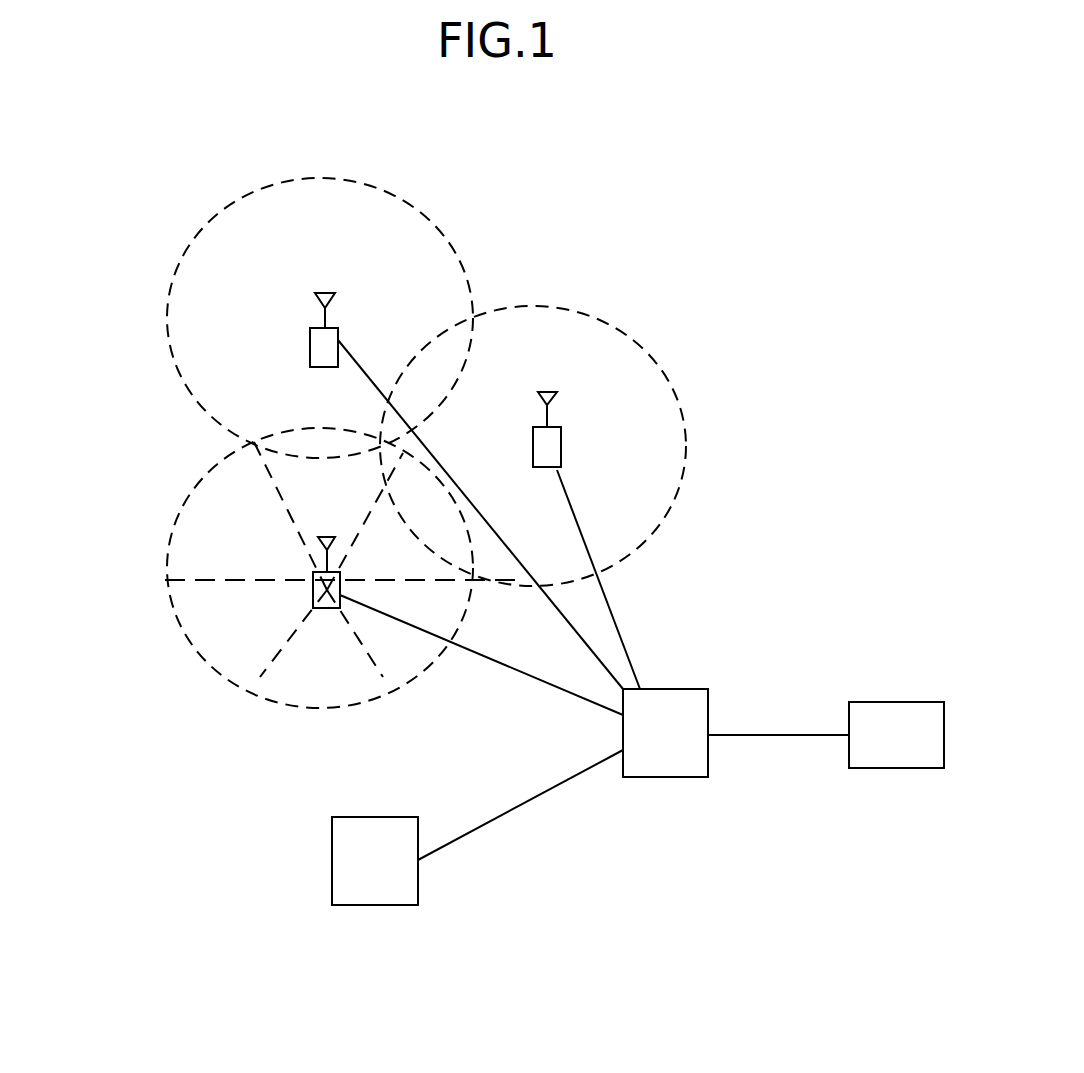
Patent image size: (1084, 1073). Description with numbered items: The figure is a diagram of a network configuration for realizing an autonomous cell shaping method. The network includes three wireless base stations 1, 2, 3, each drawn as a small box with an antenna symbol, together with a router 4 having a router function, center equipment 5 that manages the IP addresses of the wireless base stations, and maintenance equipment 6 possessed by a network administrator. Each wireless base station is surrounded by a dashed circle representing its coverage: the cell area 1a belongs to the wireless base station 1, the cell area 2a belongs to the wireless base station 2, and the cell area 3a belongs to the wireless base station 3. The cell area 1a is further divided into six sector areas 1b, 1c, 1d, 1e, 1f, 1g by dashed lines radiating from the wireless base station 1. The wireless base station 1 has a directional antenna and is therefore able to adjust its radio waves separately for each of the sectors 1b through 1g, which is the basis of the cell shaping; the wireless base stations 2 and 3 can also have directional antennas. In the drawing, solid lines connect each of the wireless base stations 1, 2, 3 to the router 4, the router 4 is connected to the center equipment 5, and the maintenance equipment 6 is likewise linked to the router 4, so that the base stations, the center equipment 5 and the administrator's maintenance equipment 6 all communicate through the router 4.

The wireless base station 1 is at (307, 610).
The cell area 1a is at (167, 575).
The sector area 1b is at (313, 507).
The sector area 1c is at (193, 550).
The sector area 1d is at (233, 620).
The sector area 1e is at (353, 667).
The sector area 1f is at (397, 667).
The sector area 1g is at (403, 560).
The wireless base station 2 is at (310, 333).
The cell area 2a is at (400, 243).
The wireless base station 3 is at (562, 447).
The cell area 3a is at (567, 332).
The router 4 is at (677, 762).
The center equipment 5 is at (910, 755).
The maintenance equipment 6 is at (345, 885).